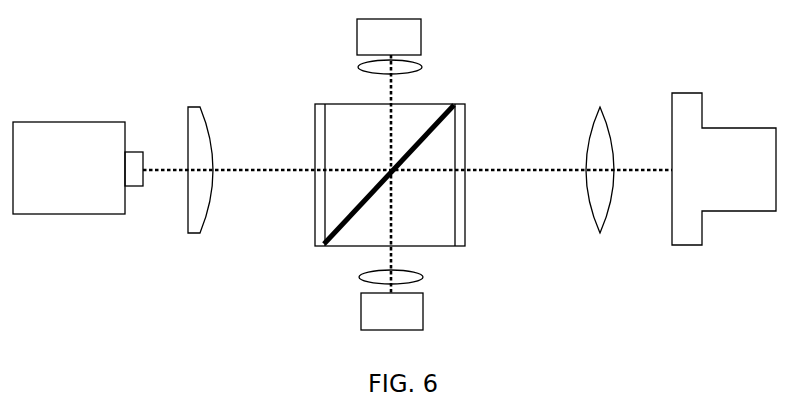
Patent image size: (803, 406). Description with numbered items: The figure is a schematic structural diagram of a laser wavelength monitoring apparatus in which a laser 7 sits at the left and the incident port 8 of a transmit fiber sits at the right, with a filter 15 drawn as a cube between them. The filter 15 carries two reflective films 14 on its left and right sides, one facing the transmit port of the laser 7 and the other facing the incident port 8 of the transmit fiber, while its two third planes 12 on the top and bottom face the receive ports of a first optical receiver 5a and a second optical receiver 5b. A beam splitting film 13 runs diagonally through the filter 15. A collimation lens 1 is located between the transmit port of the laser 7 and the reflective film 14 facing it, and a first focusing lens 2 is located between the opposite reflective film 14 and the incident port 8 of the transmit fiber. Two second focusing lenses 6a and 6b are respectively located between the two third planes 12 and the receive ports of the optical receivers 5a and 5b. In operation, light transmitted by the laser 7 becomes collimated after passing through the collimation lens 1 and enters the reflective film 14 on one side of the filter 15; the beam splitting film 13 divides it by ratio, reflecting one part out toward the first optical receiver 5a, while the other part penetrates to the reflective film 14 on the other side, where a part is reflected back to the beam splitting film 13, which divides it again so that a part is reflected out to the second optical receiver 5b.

The laser 7 is at (62, 122).
The collimation lens 1 is at (192, 107).
The third planes 12 is at (345, 104).
The beam splitting film 13 is at (367, 190).
The reflective films 14 is at (315, 188).
The filter 15 is at (438, 148).
The first optical receiver 5a is at (421, 33).
The second focusing lens 6a is at (424, 63).
The second optical receiver 5b is at (423, 305).
The second focusing lens 6b is at (424, 277).
The first focusing lens 2 is at (593, 127).
The incident port of transmit fiber 8 is at (732, 128).